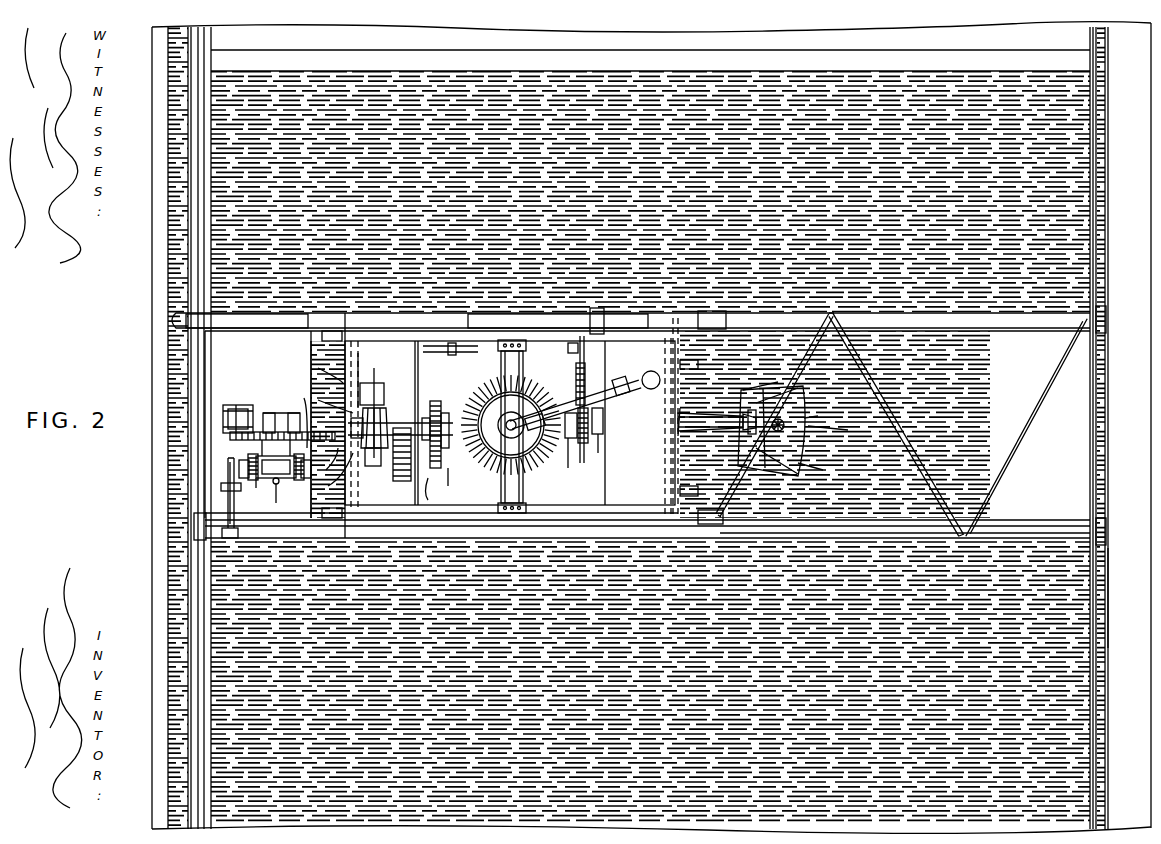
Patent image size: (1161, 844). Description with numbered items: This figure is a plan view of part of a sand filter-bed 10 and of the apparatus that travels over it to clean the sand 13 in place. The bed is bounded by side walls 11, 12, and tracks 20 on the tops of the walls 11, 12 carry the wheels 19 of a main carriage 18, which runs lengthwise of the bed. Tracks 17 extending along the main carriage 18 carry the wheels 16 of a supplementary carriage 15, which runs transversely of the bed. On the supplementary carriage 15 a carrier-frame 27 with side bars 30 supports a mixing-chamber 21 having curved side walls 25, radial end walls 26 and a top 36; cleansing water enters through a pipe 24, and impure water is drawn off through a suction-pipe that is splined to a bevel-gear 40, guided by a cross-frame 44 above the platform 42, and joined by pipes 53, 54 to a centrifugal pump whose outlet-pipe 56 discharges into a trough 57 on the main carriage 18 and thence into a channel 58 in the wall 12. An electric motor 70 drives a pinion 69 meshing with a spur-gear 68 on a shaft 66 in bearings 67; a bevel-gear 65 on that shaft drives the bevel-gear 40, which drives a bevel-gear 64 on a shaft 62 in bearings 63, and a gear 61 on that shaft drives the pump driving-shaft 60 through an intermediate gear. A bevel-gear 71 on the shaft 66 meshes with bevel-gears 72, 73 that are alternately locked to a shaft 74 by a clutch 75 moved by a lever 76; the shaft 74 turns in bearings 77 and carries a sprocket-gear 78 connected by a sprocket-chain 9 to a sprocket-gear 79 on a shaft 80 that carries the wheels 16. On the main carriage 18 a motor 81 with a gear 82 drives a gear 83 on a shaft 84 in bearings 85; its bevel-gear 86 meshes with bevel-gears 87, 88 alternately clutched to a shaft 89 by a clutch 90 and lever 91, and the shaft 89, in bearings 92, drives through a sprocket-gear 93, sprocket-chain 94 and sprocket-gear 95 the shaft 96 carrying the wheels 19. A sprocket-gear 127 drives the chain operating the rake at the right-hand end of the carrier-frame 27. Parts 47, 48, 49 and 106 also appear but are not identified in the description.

The sprocket-chain 9 is at (358, 379).
The sand filter-bed 10 is at (650, 181).
The side wall 11 is at (235, 240).
The side wall 12 is at (152, 320).
The sand 13 is at (260, 305).
The supplementary carriage 15 is at (831, 418).
The wheels 16 is at (694, 321).
The tracks 17 is at (762, 518).
The main carriage 18 is at (901, 424).
The wheels 19 is at (1099, 524).
The tracks 20 is at (200, 576).
The mixing-chamber 21 is at (792, 428).
The pipe 24 is at (710, 436).
The curved side walls 25 is at (825, 414).
The radial end walls 26 is at (760, 379).
The carrier-frame 27 is at (691, 415).
The side bars 30 is at (740, 400).
The top of mixing-chamber 36 is at (771, 431).
The bevel-gear 40 is at (518, 478).
The supplementary-carriage platform 42 is at (686, 480).
The cross-frame 44 is at (493, 480).
The gear wheel 47 is at (486, 382).
The shaft 48 is at (462, 345).
The shaft 49 is at (578, 348).
The pipe 53 is at (546, 384).
The pipe 54 is at (610, 390).
The outlet-pipe 56 is at (578, 321).
The trough 57 is at (575, 370).
The channel 58 is at (160, 345).
The driving-shaft 60 is at (574, 381).
The gear 61 is at (592, 440).
The shaft 62 is at (596, 415).
The bearings 63 is at (582, 428).
The bevel-gear 64 is at (556, 452).
The bevel-gear 65 is at (425, 455).
The shaft 66 is at (410, 414).
The bearings 67 is at (448, 433).
The spur-gear 68 is at (433, 405).
The pinion 69 is at (452, 481).
The electric motor 70 is at (435, 490).
The bevel-gear 71 is at (372, 380).
The bevel-gear 72 is at (351, 423).
The bevel-gear 73 is at (356, 425).
The shaft 74 is at (366, 458).
The clutch 75 is at (334, 399).
The lever 76 is at (329, 459).
The bearings 77 is at (338, 478).
The sprocket-gear 78 is at (372, 375).
The sprocket-gear 79 is at (329, 369).
The shaft 80 is at (340, 322).
The motor 81 is at (222, 397).
The gear 82 is at (273, 435).
The gear 83 is at (298, 395).
The shaft 84 is at (281, 413).
The bearings 85 is at (292, 405).
The bevel-gear 86 is at (277, 460).
The bevel-gear 87 is at (298, 470).
The bevel-gear 88 is at (250, 472).
The shaft 89 is at (236, 470).
The clutch 90 is at (275, 470).
The lever 91 is at (278, 497).
The bearings 92 is at (335, 470).
The sprocket-gear 93 is at (222, 455).
The sprocket-chain 94 is at (215, 478).
The sprocket-gear 95 is at (214, 526).
The shaft 96 is at (275, 535).
The arm 106 is at (841, 428).
The sprocket-gear 127 is at (823, 466).